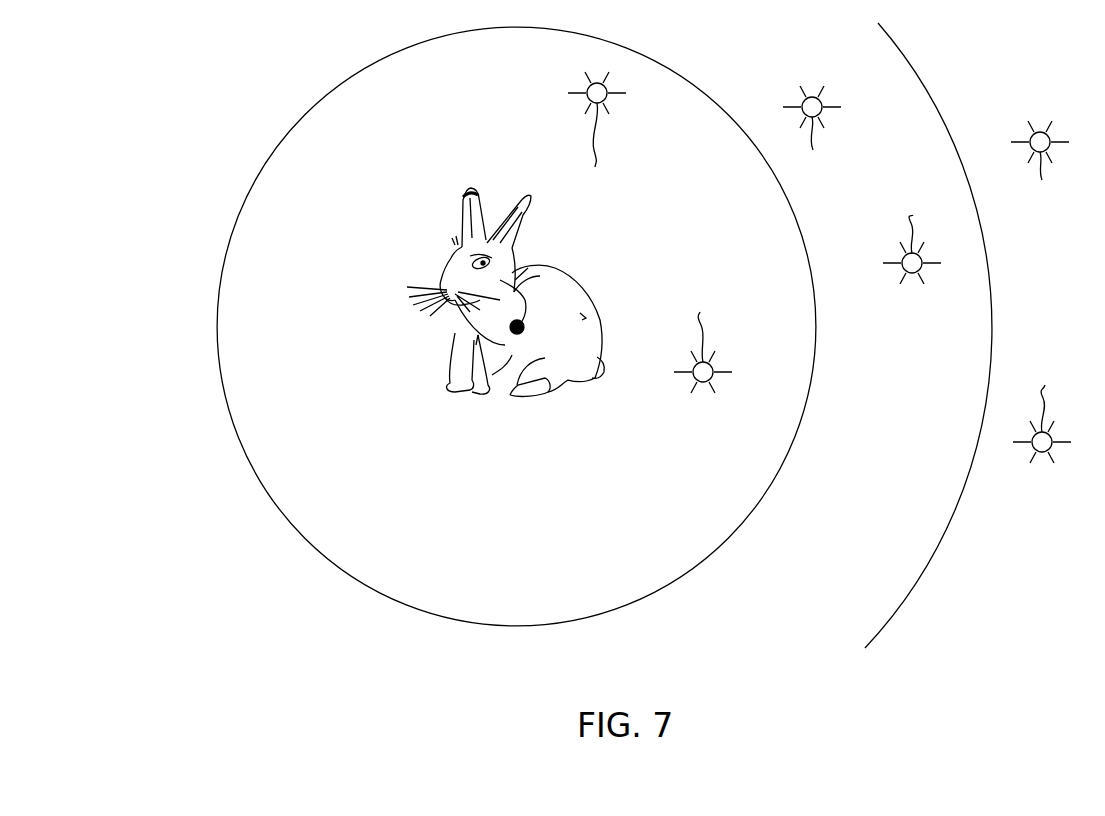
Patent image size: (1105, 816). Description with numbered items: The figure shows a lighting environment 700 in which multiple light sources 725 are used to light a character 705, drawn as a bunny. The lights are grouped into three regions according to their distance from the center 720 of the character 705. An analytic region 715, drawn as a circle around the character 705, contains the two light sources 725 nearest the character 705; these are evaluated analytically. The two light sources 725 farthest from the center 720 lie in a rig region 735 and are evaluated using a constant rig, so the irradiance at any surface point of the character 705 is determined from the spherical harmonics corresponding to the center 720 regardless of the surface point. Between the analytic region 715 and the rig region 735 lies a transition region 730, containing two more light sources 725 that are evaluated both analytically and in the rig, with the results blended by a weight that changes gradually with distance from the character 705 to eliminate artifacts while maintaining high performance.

The lighting environment 700 is at (830, 722).
The character 705 is at (562, 265).
The analytic region 715 is at (537, 592).
The center 720 is at (470, 337).
The light sources 725 is at (824, 267).
The transition region 730 is at (843, 563).
The rig region 735 is at (1033, 592).